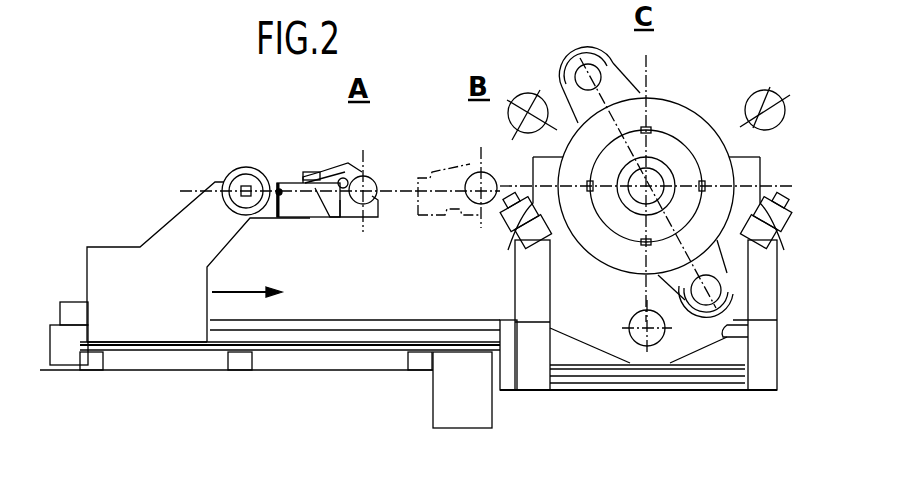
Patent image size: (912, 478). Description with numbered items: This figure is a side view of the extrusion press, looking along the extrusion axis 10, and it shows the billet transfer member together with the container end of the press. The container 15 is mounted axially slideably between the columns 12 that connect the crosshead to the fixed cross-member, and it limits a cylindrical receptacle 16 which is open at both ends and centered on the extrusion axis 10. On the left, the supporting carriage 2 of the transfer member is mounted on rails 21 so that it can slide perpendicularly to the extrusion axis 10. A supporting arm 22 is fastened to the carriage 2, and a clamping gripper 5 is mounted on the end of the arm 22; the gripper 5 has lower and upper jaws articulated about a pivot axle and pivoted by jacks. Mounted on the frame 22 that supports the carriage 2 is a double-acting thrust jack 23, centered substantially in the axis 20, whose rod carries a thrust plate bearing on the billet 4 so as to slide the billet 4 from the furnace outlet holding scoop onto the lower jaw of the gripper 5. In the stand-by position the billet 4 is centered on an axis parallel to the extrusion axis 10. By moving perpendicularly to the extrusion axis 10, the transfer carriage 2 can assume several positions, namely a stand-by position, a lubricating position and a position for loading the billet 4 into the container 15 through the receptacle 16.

The supporting carriage 2 is at (193, 220).
The billet 4 is at (378, 186).
The clamping gripper 5 is at (352, 215).
The extrusion axis 10 is at (652, 182).
The columns 12 is at (763, 100).
The container 15 is at (670, 143).
The cylindrical receptacle 16 is at (650, 168).
The axis 20 is at (373, 178).
The rails 21 is at (270, 335).
The supporting arm 22 is at (299, 186).
The double-acting thrust jack 23 is at (280, 190).